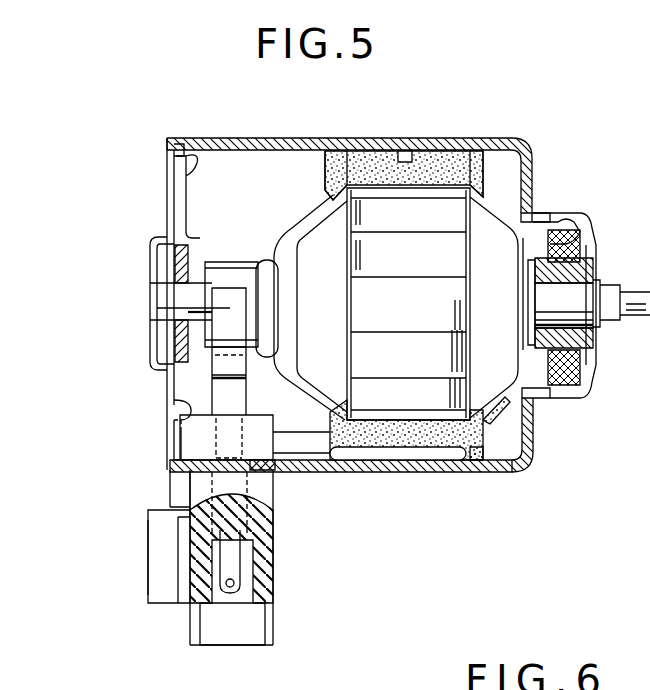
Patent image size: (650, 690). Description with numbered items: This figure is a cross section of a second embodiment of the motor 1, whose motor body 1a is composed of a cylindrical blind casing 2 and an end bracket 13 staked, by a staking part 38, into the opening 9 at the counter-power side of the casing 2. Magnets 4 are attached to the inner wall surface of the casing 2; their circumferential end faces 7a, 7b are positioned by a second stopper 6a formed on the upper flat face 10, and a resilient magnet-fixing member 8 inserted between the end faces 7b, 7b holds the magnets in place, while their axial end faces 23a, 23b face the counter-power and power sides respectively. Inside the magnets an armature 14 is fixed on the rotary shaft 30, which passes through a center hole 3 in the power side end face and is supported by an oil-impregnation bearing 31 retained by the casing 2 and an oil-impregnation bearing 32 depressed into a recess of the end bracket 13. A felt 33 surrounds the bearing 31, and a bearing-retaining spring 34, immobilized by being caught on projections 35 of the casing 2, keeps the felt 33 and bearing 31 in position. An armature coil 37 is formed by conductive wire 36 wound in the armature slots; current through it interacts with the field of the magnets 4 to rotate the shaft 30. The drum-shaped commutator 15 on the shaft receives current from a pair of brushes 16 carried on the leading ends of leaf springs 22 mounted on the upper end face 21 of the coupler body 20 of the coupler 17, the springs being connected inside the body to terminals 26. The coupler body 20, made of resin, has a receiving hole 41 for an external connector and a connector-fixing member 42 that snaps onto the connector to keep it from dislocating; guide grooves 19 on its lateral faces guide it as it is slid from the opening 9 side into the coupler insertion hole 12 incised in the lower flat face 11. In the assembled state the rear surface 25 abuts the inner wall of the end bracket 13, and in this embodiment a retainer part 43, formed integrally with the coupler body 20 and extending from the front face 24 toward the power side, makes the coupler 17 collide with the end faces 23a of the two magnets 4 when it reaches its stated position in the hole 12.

The motor 1 is at (636, 128).
The motor body 1a is at (240, 104).
The casing 2 is at (233, 140).
The center hole 3 is at (592, 268).
The magnets 4 is at (332, 200).
The second stopper 6a is at (407, 151).
The end face 7a is at (440, 152).
The end face 7b is at (478, 473).
The magnet-fixing member 8 is at (430, 462).
The opening 9 is at (182, 150).
The flat face 10 is at (515, 140).
The flat face 11 is at (516, 473).
The coupler insertion hole 12 is at (256, 466).
The end bracket 13 is at (190, 168).
The armature 14 is at (530, 390).
The commutator 15 is at (240, 268).
The brushes 16 is at (220, 288).
The coupler 17 is at (138, 560).
The guide grooves 19 is at (178, 476).
The coupler body 20 is at (266, 605).
The upper end face 21 is at (175, 415).
The leaf springs 22 is at (160, 305).
The end face 23a is at (326, 152).
The end face 23b is at (488, 152).
The front face 24 is at (276, 430).
The rear surface 25 is at (182, 452).
The terminals 26 is at (232, 566).
The rotary shaft 30 is at (578, 312).
The oil-impregnation bearing 31 is at (586, 352).
The oil-impregnation bearing 32 is at (160, 268).
The felt 33 is at (594, 233).
The bearing-retaining spring 34 is at (562, 220).
The projections 35 is at (546, 213).
The conductive wire 36 is at (452, 303).
The armature coil 37 is at (496, 402).
The staking part 38 is at (172, 157).
The receiving hole 41 is at (200, 625).
The connector-fixing member 42 is at (165, 600).
The retainer part 43 is at (312, 452).